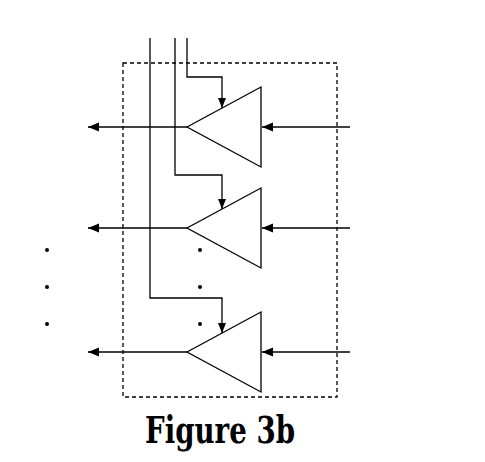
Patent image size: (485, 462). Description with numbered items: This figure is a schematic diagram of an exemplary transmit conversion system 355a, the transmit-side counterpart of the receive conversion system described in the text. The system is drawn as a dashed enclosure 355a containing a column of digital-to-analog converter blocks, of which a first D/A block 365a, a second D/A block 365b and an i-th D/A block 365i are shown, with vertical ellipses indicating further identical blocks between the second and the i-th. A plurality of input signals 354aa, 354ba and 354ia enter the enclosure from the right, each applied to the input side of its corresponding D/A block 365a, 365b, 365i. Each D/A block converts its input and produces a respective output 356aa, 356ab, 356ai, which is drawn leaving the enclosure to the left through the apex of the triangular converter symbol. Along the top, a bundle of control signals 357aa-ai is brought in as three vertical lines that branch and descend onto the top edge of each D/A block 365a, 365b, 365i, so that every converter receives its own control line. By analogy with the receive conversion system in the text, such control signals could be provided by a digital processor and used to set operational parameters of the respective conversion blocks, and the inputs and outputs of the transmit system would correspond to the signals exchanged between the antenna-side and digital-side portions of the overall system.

The digital-to-analog converter bank 355a is at (233, 209).
The digital input signals 357aa-ai is at (165, 172).
The digital-to-analog converter 365a is at (257, 122).
The digital-to-analog converter 365b is at (258, 223).
The digital-to-analog converter 365i is at (253, 346).
The input signal 354aa is at (347, 127).
The input signal 354ba is at (347, 226).
The input signal 354ia is at (342, 351).
The output signal 356aa is at (98, 128).
The output signal 356ab is at (98, 228).
The output signal 356ai is at (100, 352).